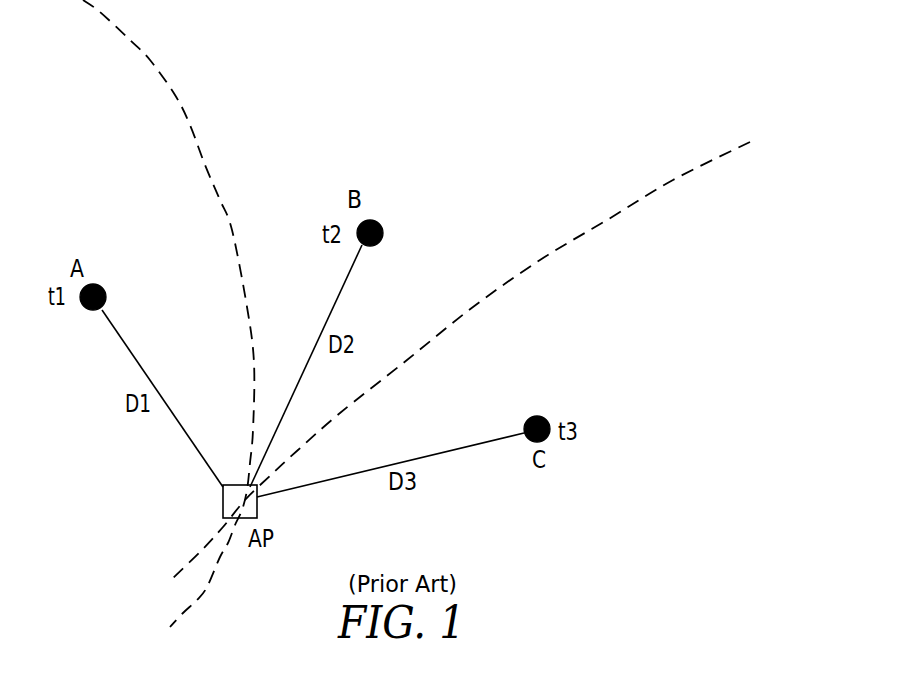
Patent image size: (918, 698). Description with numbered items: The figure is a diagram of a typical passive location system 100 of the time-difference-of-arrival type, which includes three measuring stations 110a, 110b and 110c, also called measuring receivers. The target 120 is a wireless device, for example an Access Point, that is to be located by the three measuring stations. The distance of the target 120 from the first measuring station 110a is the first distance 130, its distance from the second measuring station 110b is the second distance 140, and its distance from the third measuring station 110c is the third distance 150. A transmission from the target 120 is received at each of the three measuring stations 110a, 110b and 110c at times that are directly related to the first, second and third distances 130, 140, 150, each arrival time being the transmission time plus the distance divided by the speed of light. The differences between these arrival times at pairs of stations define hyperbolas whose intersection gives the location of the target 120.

The passive location system 100 is at (500, 77).
The measuring station 110a is at (104, 286).
The measuring station 110b is at (376, 221).
The measuring station 110c is at (541, 416).
The target 120 is at (223, 503).
The distance D1 130 is at (153, 385).
The distance D2 140 is at (335, 305).
The distance D3 150 is at (445, 450).